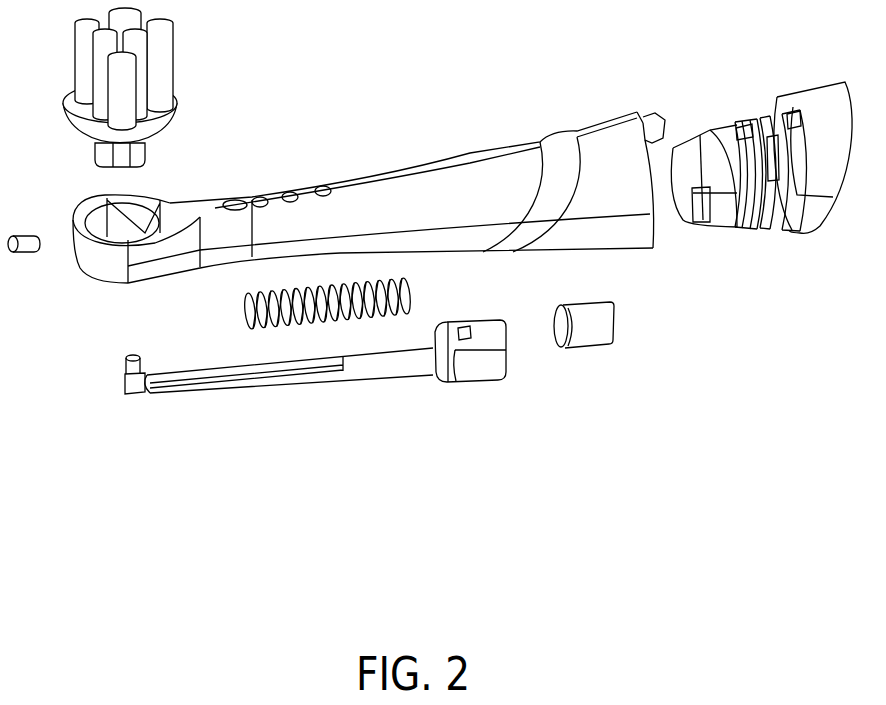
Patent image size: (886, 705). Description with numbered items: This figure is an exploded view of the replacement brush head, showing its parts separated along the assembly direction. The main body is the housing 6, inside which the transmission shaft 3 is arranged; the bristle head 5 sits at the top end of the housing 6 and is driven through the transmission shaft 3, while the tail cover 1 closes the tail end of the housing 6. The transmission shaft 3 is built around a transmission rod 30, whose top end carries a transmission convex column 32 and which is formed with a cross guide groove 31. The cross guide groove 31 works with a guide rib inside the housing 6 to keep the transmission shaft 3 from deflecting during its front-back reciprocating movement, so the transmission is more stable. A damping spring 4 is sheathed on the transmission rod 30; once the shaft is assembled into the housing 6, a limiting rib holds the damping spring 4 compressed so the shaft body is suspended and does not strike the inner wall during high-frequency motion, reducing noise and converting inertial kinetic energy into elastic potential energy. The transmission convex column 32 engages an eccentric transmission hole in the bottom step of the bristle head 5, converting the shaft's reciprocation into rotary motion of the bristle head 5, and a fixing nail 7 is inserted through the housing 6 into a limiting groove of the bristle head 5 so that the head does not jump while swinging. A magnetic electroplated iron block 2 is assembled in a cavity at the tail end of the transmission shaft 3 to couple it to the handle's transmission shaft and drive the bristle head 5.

The tail cover 1 is at (812, 86).
The magnetic electroplated iron block 2 is at (622, 303).
The transmission shaft 3 is at (480, 373).
The damping spring 4 is at (418, 283).
The bristle head 5 is at (172, 120).
The housing 6 is at (405, 168).
The fixing nail 7 is at (35, 252).
The transmission rod 30 is at (363, 385).
The cross guide groove 31 is at (276, 379).
The transmission convex column 32 is at (113, 372).